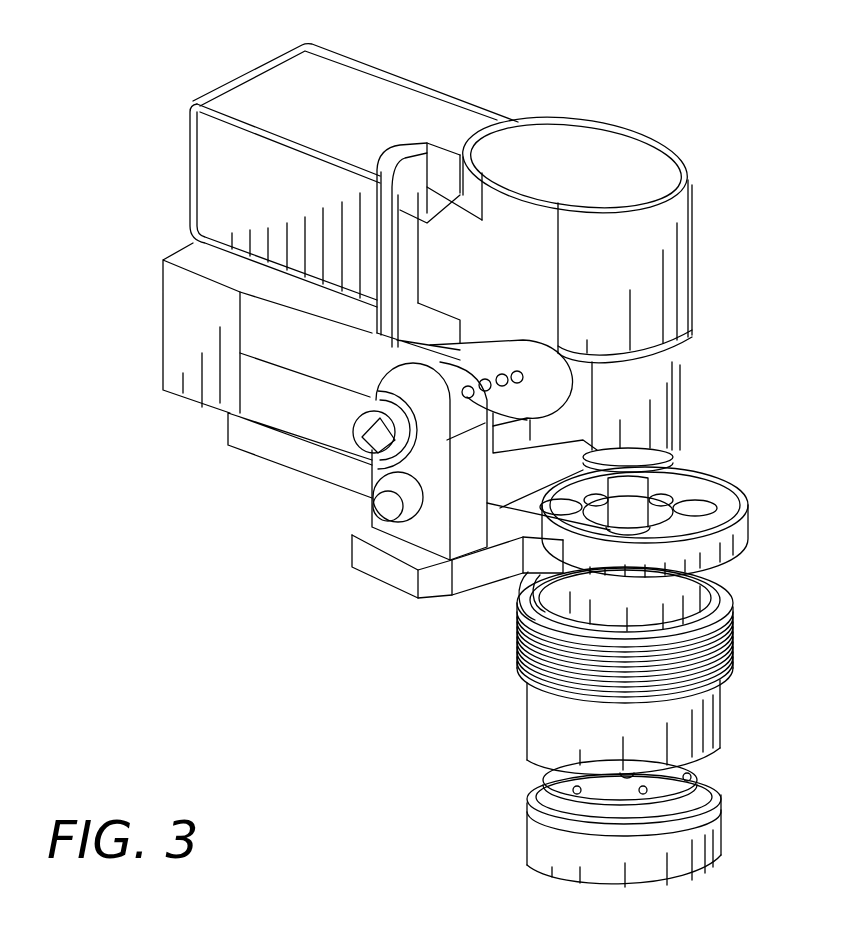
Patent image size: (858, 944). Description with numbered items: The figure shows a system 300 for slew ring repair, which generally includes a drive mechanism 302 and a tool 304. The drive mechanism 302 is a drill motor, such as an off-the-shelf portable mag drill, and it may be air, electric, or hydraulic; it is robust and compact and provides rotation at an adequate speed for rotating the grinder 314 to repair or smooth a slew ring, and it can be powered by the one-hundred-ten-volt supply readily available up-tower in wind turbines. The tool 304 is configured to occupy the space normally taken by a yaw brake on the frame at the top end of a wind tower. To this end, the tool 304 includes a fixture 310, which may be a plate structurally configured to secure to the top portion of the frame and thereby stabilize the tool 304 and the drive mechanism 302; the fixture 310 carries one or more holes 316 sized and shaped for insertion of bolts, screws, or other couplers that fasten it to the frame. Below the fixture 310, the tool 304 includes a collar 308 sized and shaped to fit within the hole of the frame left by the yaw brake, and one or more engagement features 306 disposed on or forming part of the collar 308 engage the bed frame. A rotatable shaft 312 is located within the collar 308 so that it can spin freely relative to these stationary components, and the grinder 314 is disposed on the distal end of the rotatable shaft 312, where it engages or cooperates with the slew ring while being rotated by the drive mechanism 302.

The system 300 is at (198, 53).
The drive mechanism 302 is at (698, 153).
The tool 304 is at (756, 627).
The engagement features 306 is at (516, 649).
The collar 308 is at (527, 704).
The fixture 310 is at (748, 527).
The rotatable shaft 312 is at (607, 490).
The grinder 314 is at (527, 834).
The holes 316 is at (700, 497).